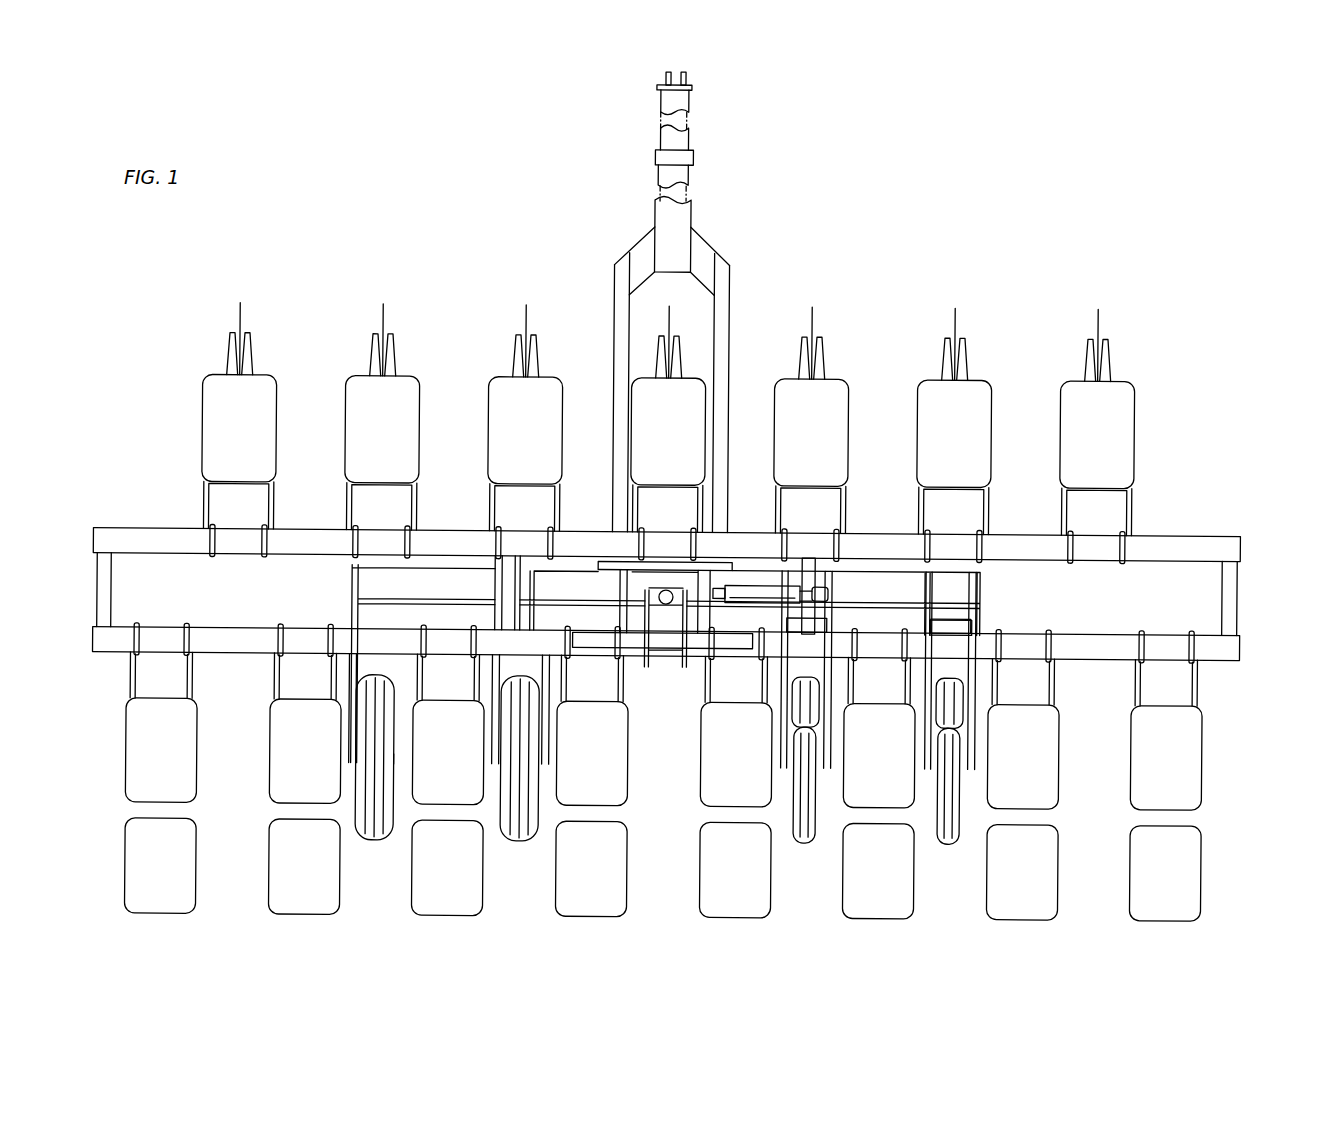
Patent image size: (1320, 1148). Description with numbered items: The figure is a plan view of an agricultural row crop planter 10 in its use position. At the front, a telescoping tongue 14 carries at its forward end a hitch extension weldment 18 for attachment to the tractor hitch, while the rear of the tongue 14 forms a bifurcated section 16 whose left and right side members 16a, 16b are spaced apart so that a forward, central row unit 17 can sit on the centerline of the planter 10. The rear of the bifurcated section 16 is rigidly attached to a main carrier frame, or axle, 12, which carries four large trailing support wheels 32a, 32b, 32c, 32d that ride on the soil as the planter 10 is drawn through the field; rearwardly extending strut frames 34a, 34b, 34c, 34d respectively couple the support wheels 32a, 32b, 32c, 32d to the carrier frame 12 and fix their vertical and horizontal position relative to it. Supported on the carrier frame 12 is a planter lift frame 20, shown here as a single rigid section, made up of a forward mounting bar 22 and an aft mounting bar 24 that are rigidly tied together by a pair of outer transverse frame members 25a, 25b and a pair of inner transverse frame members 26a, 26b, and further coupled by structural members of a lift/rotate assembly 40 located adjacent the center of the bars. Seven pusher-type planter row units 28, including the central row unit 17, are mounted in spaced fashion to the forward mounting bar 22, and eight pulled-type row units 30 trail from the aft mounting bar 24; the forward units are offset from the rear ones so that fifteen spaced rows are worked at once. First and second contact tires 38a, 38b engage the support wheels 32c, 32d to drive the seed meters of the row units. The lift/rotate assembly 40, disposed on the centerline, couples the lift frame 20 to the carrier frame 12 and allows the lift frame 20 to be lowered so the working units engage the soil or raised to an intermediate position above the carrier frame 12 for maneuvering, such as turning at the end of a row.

The agricultural row crop planter 10 is at (490, 262).
The main carrier frame 12 is at (458, 578).
The telescoping tongue 14 is at (640, 166).
The bifurcated section 16 is at (598, 260).
The left side member 16a is at (616, 358).
The right side member 16b is at (720, 316).
The central row unit 17 is at (676, 436).
The hitch extension weldment 18 is at (655, 77).
The planter lift frame 20 is at (113, 514).
The forward mounting bar 22 is at (174, 537).
The aft mounting bar 24 is at (110, 643).
The outer transverse frame member 25a is at (100, 593).
The outer transverse frame member 25b is at (1232, 596).
The inner transverse frame member 26a is at (538, 612).
The inner transverse frame member 26b is at (800, 560).
The pusher-type planter row units 28 is at (343, 380).
The pulled-type row units 30 is at (238, 890).
The support wheel 32a is at (357, 842).
The support wheel 32b is at (502, 843).
The support wheel 32c is at (803, 800).
The support wheel 32d is at (948, 800).
The strut frame 34a is at (350, 610).
The strut frame 34b is at (553, 610).
The strut frame 34c is at (833, 617).
The strut frame 34d is at (980, 615).
The first contact tire 38a is at (815, 800).
The second contact tire 38b is at (958, 800).
The lift/rotate assembly 40 is at (669, 680).